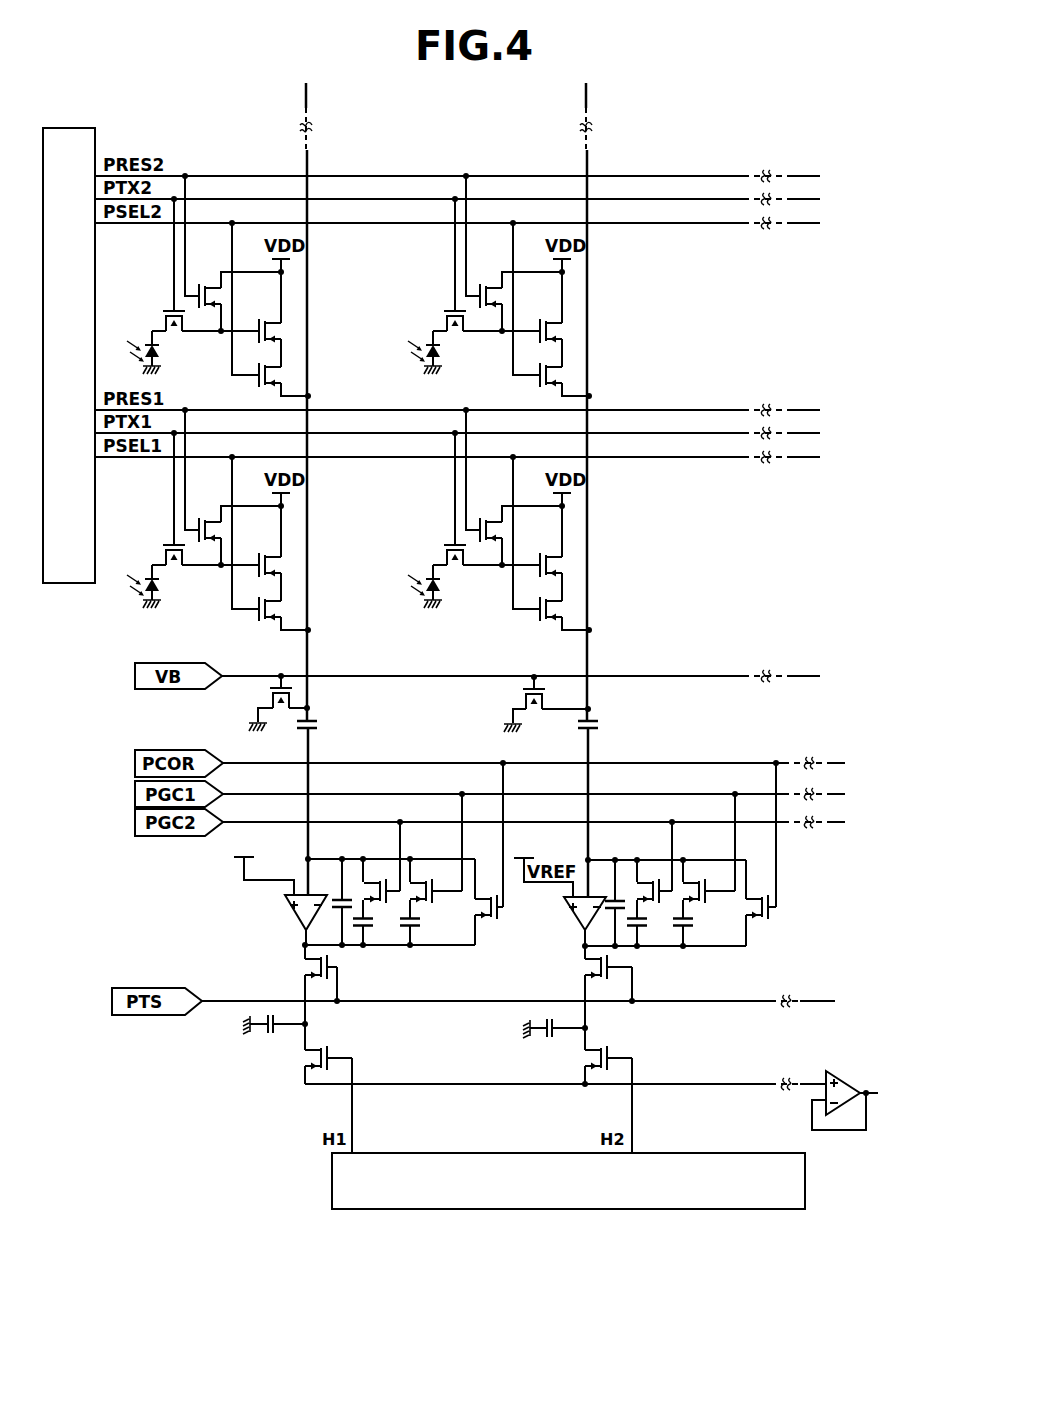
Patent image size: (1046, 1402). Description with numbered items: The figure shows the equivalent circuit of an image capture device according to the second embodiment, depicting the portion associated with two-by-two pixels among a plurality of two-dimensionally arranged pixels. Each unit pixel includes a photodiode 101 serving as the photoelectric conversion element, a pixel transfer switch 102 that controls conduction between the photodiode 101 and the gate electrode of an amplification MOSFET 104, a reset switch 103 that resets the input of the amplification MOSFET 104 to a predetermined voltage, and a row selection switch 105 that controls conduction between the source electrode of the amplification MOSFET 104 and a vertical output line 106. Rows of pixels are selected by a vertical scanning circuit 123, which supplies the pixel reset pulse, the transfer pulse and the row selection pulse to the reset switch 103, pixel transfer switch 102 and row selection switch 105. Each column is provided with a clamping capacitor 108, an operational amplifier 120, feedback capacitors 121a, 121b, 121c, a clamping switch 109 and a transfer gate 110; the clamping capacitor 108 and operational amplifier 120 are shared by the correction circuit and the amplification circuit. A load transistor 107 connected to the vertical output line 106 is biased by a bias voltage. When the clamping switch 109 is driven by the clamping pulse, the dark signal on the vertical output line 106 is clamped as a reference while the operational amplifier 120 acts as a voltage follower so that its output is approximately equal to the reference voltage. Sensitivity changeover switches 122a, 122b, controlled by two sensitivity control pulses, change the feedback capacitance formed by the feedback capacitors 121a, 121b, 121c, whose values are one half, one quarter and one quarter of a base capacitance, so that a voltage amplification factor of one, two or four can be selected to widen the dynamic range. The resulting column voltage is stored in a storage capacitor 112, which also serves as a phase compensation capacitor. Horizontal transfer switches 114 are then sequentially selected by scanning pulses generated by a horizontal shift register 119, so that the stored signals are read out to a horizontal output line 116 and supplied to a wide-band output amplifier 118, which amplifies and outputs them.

The photodiode 101 is at (162, 353).
The pixel transfer switch 102 is at (163, 309).
The reset switch 103 is at (207, 285).
The amplification MOSFET 104 is at (262, 319).
The row selection switch 105 is at (258, 385).
The vertical output line 106 is at (306, 659).
The load transistor 107 is at (268, 692).
The clamping capacitor 108 is at (298, 729).
The clamping switch 109 is at (492, 922).
The transfer gate 110 is at (314, 967).
The storage capacitor 112 is at (270, 1036).
The horizontal transfer switch 114 is at (314, 1057).
The horizontal output line 116 is at (320, 1090).
The output amplifier 118 is at (846, 1080).
The horizontal shift register 119 is at (711, 1153).
The operational amplifier 120 is at (284, 903).
The feedback capacitor 121a is at (420, 926).
The feedback capacitor 121b is at (378, 924).
The feedback capacitor 121c is at (347, 910).
The sensitivity changeover switch 122a is at (430, 880).
The sensitivity changeover switch 122b is at (383, 880).
The vertical scanning circuit 123 is at (75, 128).